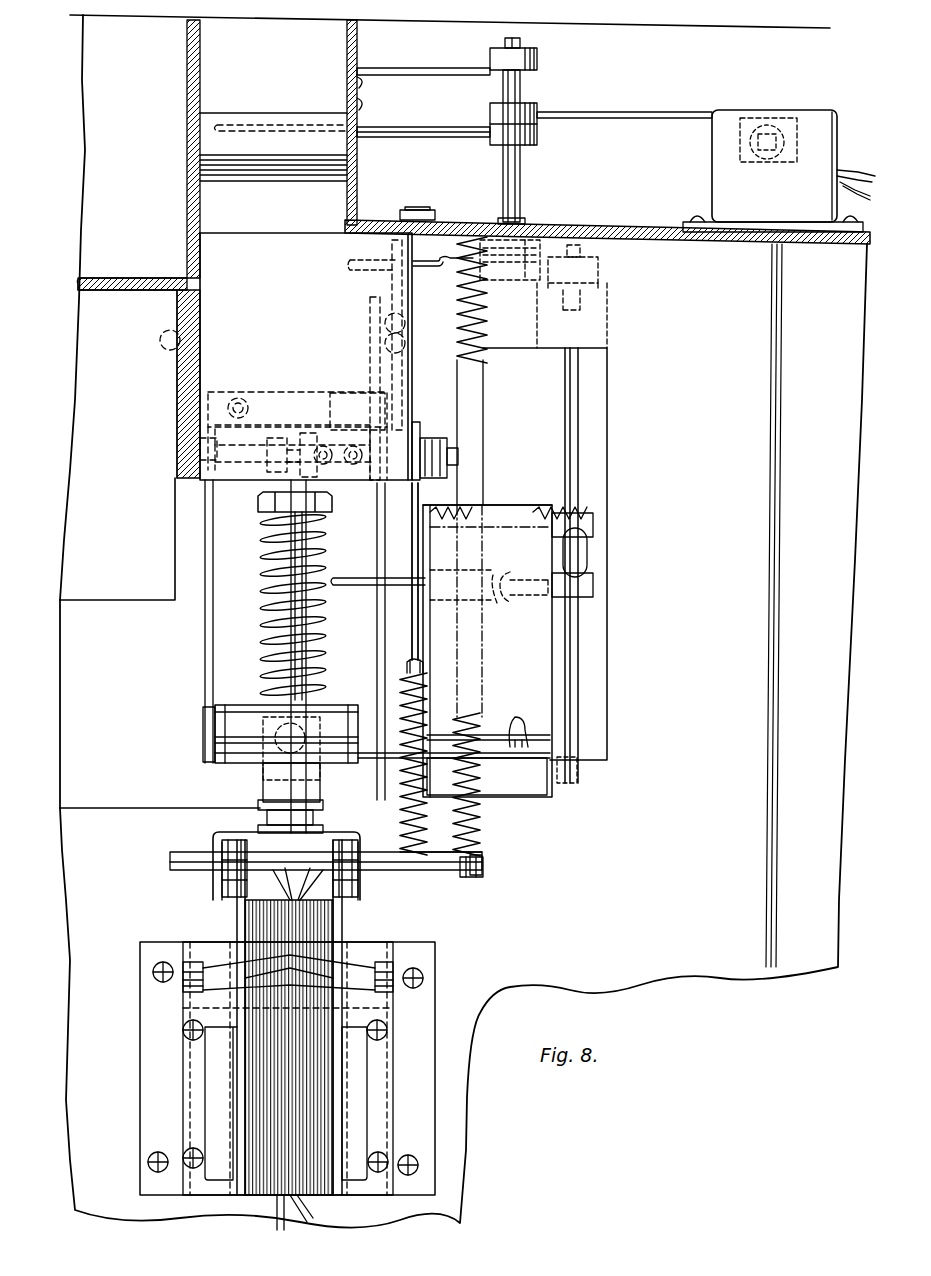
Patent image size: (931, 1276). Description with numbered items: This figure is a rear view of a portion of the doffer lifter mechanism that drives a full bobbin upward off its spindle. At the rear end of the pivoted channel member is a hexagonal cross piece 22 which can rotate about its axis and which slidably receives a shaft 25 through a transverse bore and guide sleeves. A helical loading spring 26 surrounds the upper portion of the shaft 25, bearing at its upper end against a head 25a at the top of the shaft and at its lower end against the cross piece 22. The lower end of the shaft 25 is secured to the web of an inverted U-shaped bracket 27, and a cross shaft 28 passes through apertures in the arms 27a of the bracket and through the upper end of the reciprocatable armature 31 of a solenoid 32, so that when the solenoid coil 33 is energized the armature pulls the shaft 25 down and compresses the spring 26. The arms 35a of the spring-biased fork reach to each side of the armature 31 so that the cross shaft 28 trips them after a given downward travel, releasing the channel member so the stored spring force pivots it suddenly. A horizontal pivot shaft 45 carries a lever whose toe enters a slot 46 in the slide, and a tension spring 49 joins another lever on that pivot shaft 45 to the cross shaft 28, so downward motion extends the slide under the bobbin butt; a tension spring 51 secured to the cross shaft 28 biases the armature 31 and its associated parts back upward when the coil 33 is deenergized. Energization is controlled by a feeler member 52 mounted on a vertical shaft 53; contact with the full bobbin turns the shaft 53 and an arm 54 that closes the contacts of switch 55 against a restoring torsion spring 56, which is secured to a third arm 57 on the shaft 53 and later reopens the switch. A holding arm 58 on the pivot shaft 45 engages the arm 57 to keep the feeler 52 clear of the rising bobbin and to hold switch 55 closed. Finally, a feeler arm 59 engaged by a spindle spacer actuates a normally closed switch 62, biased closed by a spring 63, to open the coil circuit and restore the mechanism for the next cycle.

The cross piece 22 is at (247, 720).
The shaft 25 is at (280, 604).
The head 25a is at (258, 507).
The helical loading spring 26 is at (267, 643).
The inverted U-shaped bracket 27 is at (223, 832).
The arms of bracket 27a is at (320, 878).
The cross shaft 28 is at (446, 870).
The reciprocatable armature 31 is at (243, 923).
The solenoid 32 is at (150, 1032).
The solenoid coil 33 is at (220, 1098).
The arms of the fork 35a is at (377, 963).
The pivot shaft 45 is at (458, 452).
The slot 46 is at (410, 538).
The tension spring 49 is at (404, 800).
The tension spring 51 is at (473, 823).
The feeler member 52 is at (408, 137).
The shaft 53 is at (520, 170).
The arm 54 is at (610, 118).
The switch 55 is at (790, 195).
The restoring torsion spring 56 is at (553, 228).
The third arm 57 is at (430, 268).
The arm 58 is at (392, 288).
The feeler arm 59 is at (362, 558).
The switch 62 is at (535, 662).
The spring 63 is at (512, 513).